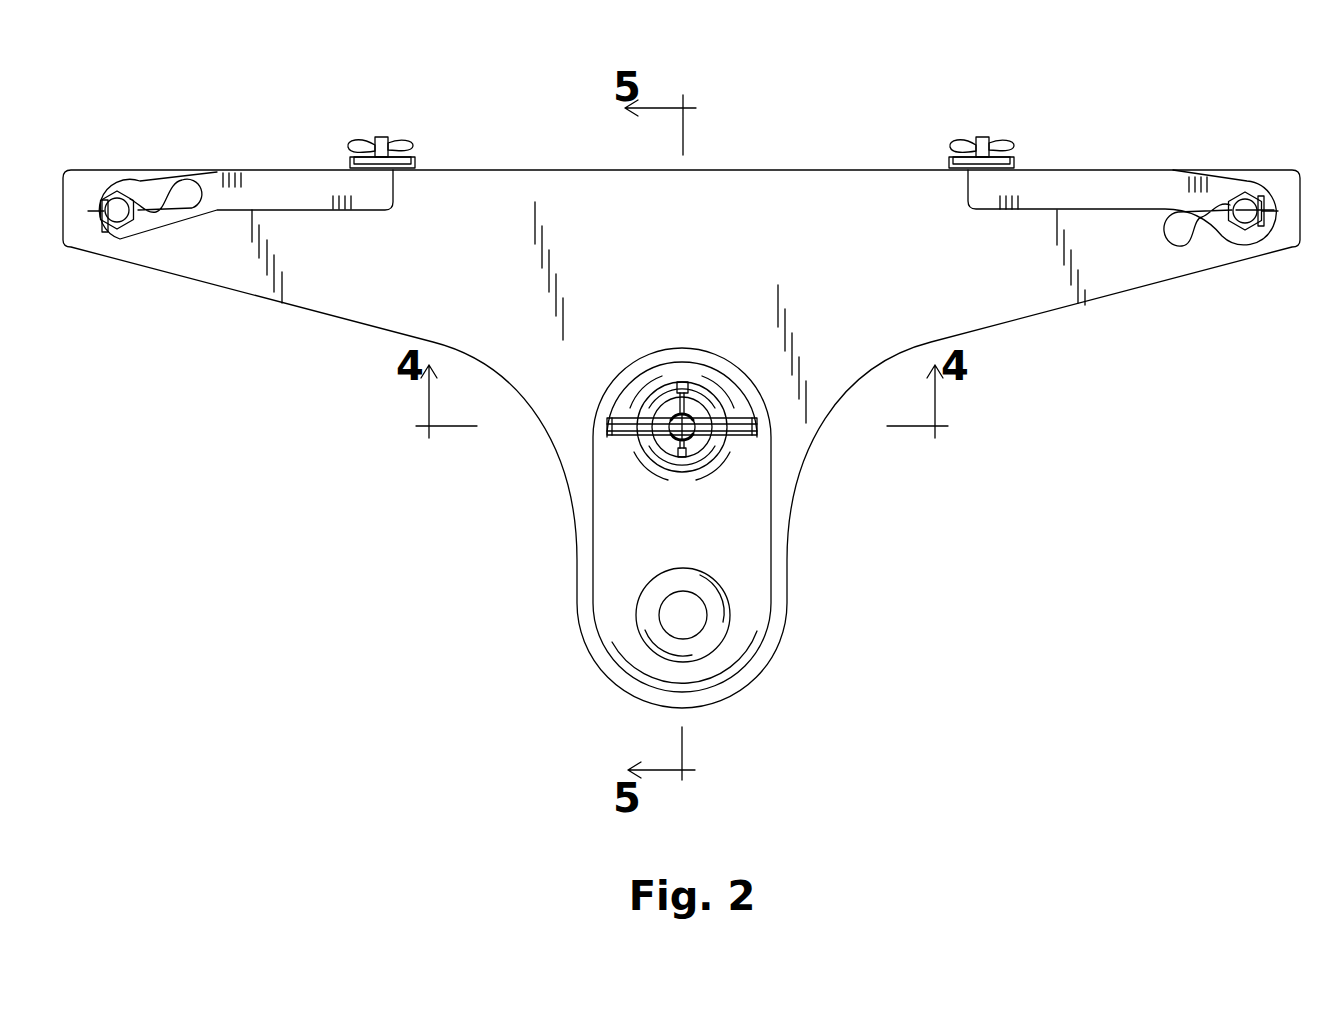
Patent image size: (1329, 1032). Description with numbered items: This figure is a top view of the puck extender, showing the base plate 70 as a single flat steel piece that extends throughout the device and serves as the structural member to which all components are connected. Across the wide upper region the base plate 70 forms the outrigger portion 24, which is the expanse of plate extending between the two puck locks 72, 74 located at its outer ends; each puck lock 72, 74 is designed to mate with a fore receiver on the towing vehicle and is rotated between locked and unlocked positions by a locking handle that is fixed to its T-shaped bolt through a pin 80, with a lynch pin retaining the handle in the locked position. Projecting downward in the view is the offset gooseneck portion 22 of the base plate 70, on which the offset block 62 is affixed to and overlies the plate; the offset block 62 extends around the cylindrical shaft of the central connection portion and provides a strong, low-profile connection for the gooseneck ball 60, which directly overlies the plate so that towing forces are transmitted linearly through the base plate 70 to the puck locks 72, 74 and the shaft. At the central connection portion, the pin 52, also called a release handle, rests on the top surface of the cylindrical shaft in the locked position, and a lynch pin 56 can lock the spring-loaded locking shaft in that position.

The offset gooseneck portion 22 is at (740, 537).
The outrigger portion 24 is at (813, 205).
The pin 52 is at (743, 433).
The lynch pin 56 is at (678, 384).
The gooseneck ball 60 is at (712, 632).
The offset block 62 is at (620, 399).
The base plate 70 is at (333, 298).
The puck lock 72 is at (117, 166).
The puck lock 74 is at (1254, 166).
The pin 80 is at (1190, 250).